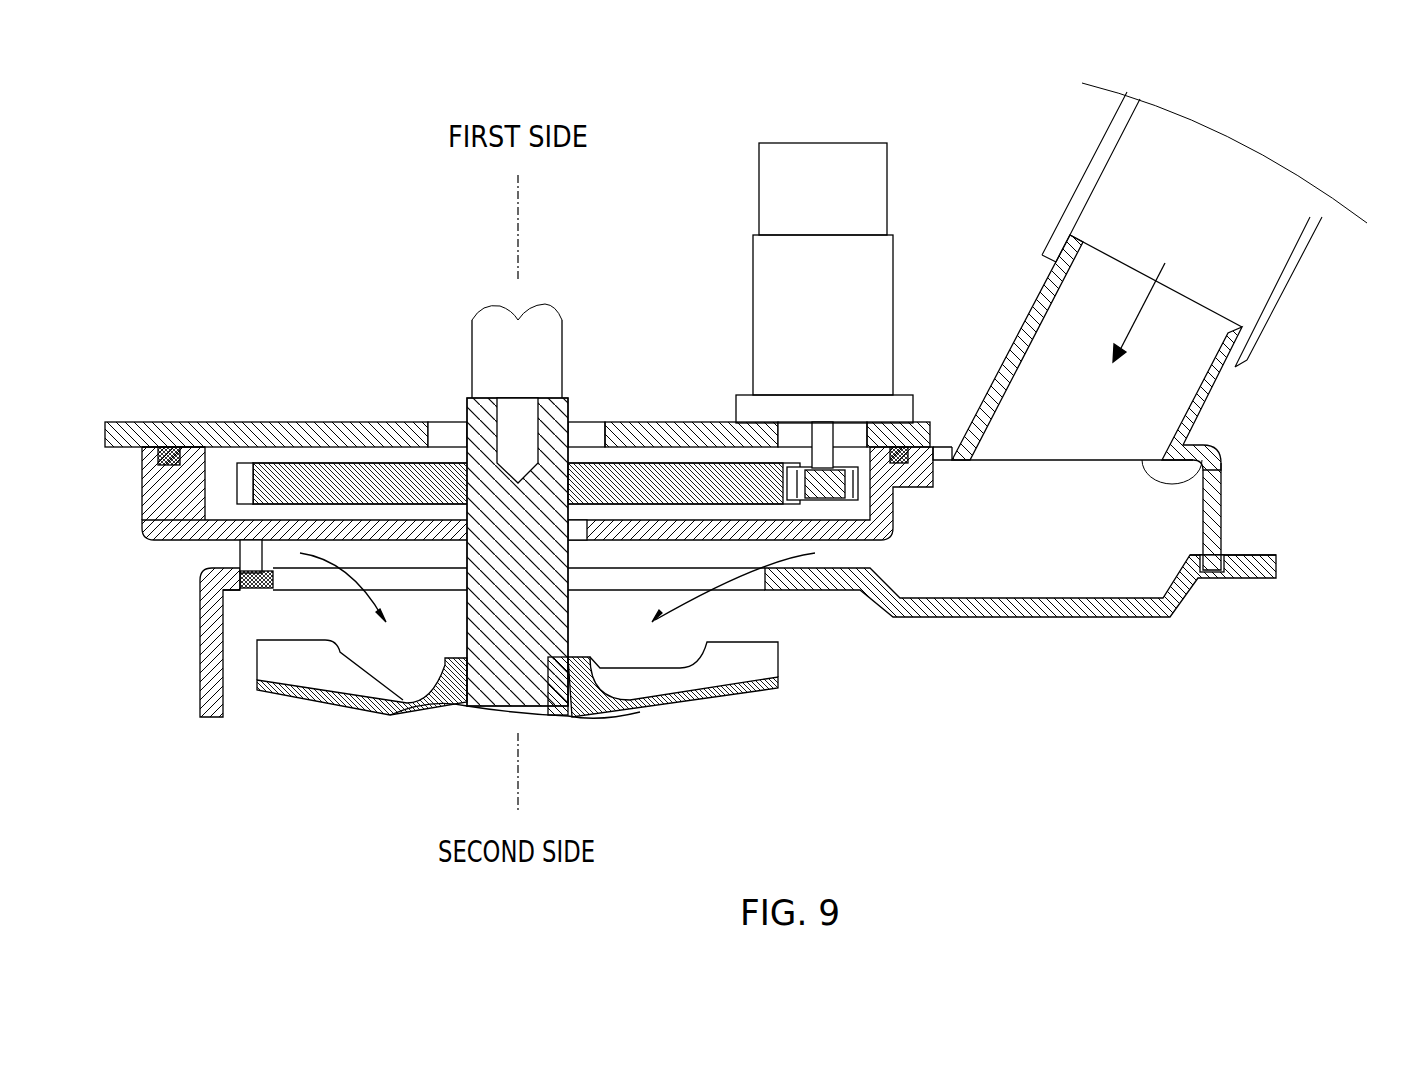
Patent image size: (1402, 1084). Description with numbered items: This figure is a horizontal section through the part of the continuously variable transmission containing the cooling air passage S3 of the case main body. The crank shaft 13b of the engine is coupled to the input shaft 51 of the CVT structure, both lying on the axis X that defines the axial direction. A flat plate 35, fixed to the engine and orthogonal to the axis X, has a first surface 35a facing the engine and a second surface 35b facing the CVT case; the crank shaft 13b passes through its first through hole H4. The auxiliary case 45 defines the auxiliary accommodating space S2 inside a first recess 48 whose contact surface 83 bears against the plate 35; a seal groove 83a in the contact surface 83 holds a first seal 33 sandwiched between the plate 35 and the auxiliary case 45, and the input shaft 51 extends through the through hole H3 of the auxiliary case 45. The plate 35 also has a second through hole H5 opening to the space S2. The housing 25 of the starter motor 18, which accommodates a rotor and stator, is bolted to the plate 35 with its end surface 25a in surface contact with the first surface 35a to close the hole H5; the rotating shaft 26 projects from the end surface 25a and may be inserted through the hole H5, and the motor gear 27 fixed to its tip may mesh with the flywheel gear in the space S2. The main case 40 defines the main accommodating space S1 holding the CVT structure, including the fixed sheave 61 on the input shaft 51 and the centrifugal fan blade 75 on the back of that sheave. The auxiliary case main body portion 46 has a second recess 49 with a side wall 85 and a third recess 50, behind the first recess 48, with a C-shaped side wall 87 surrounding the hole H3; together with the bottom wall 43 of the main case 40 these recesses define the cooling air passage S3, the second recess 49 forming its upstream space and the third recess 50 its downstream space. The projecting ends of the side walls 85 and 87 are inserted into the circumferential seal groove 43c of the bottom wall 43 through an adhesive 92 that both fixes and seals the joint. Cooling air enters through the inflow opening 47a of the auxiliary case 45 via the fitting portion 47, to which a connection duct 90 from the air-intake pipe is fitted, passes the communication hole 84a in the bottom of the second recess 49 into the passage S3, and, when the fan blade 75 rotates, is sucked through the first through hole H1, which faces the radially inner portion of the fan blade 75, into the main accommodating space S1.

The crank shaft 13b is at (572, 318).
The starter motor 18 is at (827, 283).
The housing 25 is at (753, 264).
The end surface 25a is at (740, 412).
The rotating shaft 26 is at (835, 447).
The motor gear 27 is at (852, 475).
The first seal 33 is at (176, 447).
The plate 35 is at (473, 368).
The first surface 35a is at (410, 421).
The second surface 35b is at (360, 456).
The main case 40 is at (200, 690).
The bottom wall 43 is at (687, 619).
The seal groove 43c is at (1212, 577).
The auxiliary case 45 is at (473, 506).
The auxiliary case main body portion 46 is at (1227, 500).
The fitting portion 47 is at (1162, 347).
The inflow opening 47a is at (1266, 322).
The first recess 48 is at (217, 466).
The second recess 49 is at (1138, 540).
The third recess 50 is at (300, 645).
The input shaft 51 is at (507, 697).
The fixed sheave 61 is at (724, 700).
The centrifugal fan blade 75 is at (766, 665).
The contact surface 83 is at (148, 452).
The seal groove 83a is at (140, 482).
The communication hole 84a is at (1222, 456).
The side wall 85 is at (1227, 537).
The side wall 87 is at (238, 553).
The connection duct 90 is at (1292, 287).
The adhesive 92 is at (247, 588).
The first through hole H1 is at (748, 592).
The through hole H3 is at (574, 468).
The first through hole H4 is at (590, 424).
The second through hole H5 is at (792, 424).
The main accommodating space S1 is at (968, 716).
The auxiliary accommodating space S2 is at (293, 452).
The cooling air passage S3 is at (968, 566).
The axis X is at (522, 778).